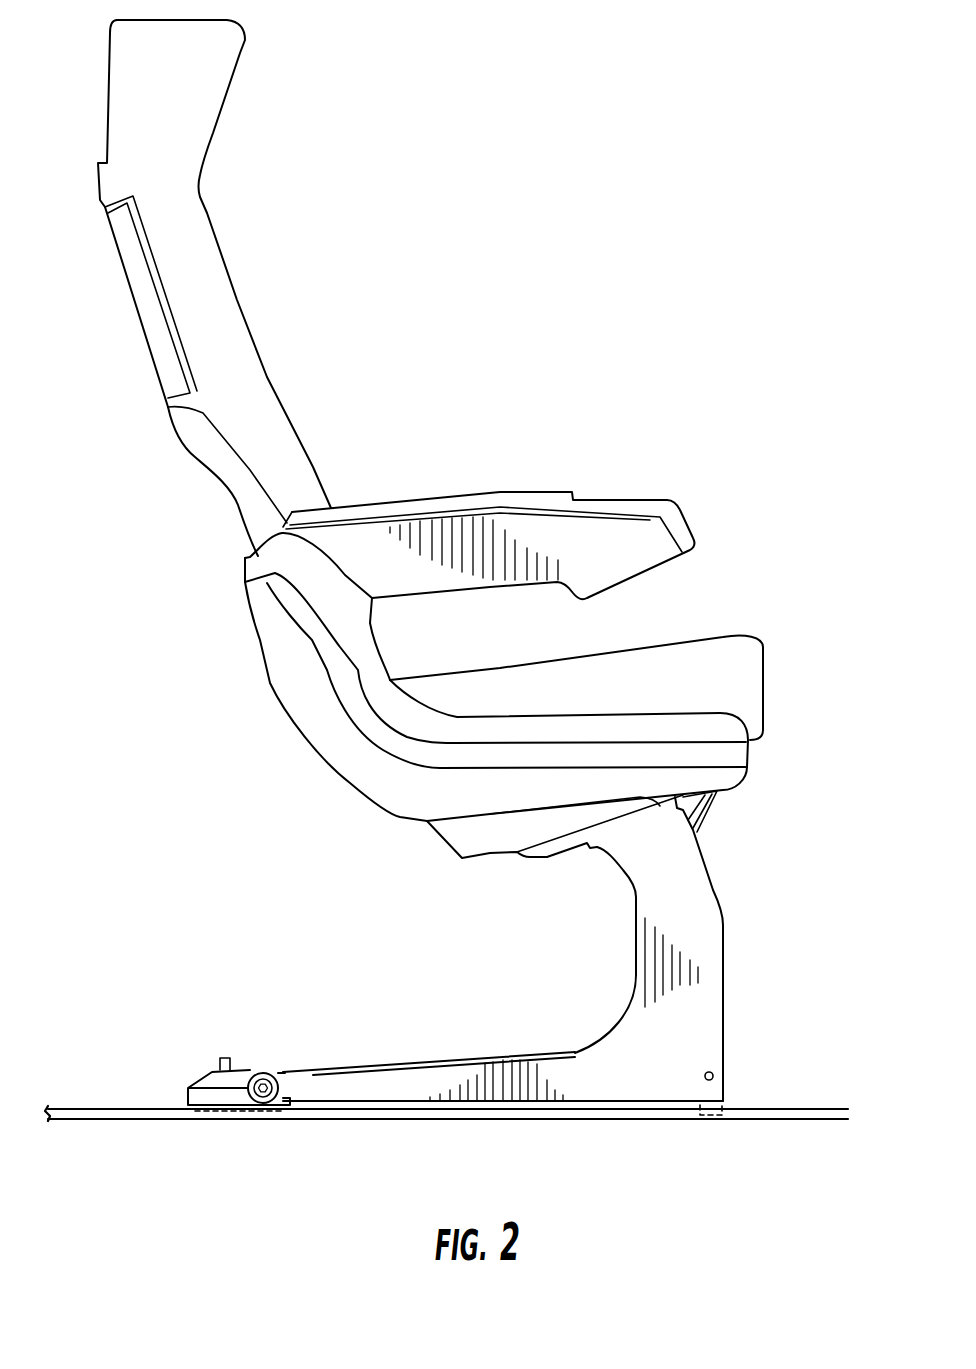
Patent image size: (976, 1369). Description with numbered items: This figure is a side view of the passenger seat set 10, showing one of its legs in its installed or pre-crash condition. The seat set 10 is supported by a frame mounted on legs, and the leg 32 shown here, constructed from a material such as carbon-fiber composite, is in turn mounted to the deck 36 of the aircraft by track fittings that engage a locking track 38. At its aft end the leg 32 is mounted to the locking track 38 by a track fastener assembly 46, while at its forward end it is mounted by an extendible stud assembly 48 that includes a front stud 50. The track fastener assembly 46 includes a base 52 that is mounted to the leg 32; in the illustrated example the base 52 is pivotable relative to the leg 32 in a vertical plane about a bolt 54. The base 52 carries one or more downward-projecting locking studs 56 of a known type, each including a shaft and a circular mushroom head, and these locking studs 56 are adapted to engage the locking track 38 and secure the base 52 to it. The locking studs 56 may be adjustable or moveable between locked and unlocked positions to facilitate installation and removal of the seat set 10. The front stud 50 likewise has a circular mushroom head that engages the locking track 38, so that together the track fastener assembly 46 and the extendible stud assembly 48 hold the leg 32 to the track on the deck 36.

The passenger seat set 10 is at (508, 205).
The leg 32 is at (682, 908).
The deck 36 is at (131, 1097).
The locking track 38 is at (63, 1121).
The track fastener assembly 46 is at (255, 1030).
The extendible stud assembly 48 is at (738, 1073).
The front stud 50 is at (712, 1116).
The base 52 is at (187, 1100).
The bolt 54 is at (279, 1084).
The locking studs 56 is at (190, 1120).